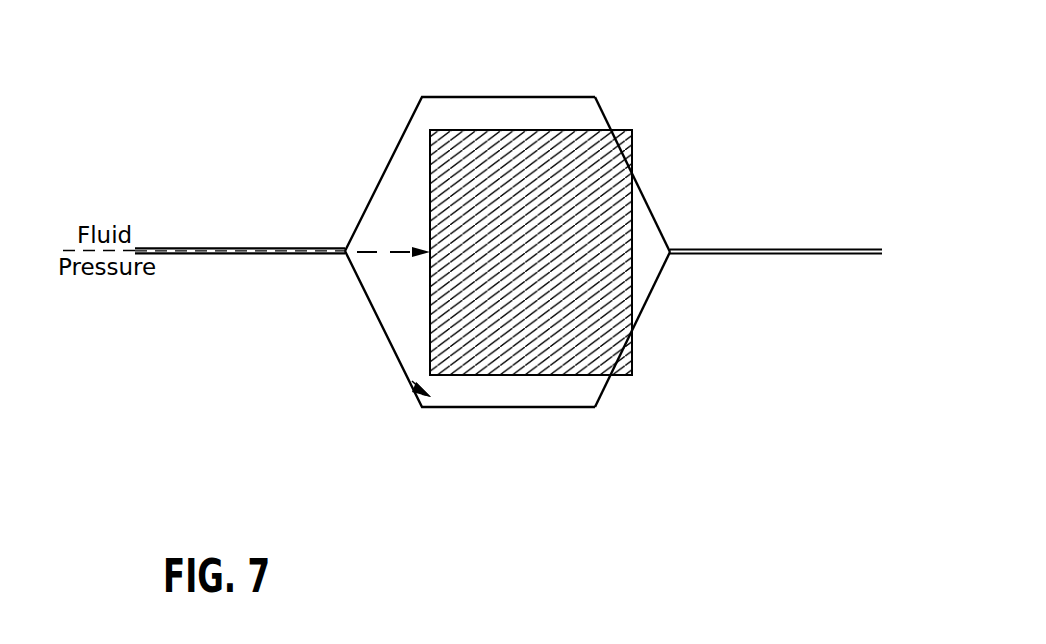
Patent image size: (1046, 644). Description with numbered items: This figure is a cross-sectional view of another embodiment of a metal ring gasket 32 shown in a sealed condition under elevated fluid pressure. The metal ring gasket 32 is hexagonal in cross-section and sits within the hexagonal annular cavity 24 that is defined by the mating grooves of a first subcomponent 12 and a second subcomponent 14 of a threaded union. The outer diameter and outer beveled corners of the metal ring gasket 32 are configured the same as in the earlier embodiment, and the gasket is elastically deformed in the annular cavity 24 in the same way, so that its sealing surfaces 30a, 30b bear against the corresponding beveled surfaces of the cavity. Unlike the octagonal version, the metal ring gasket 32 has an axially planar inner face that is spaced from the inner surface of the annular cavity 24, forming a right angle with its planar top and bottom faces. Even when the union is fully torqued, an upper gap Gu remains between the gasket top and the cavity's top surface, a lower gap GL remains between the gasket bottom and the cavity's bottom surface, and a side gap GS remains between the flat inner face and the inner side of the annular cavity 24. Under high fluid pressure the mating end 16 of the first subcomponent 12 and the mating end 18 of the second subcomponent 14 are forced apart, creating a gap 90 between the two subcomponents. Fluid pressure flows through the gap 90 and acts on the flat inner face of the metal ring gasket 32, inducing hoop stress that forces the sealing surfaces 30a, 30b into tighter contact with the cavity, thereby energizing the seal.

The first subcomponent 12 is at (733, 316).
The second subcomponent 14 is at (733, 226).
The mating end 16 is at (278, 254).
The mating end 18 is at (213, 250).
The annular cavity 24 is at (412, 381).
The sealing surface 30a is at (625, 162).
The sealing surface 30b is at (627, 345).
The metal ring gasket 32 is at (546, 239).
The gap 90 is at (320, 250).
The upper gap Gu is at (470, 110).
The lower gap GL is at (485, 395).
The side gap GS is at (377, 268).